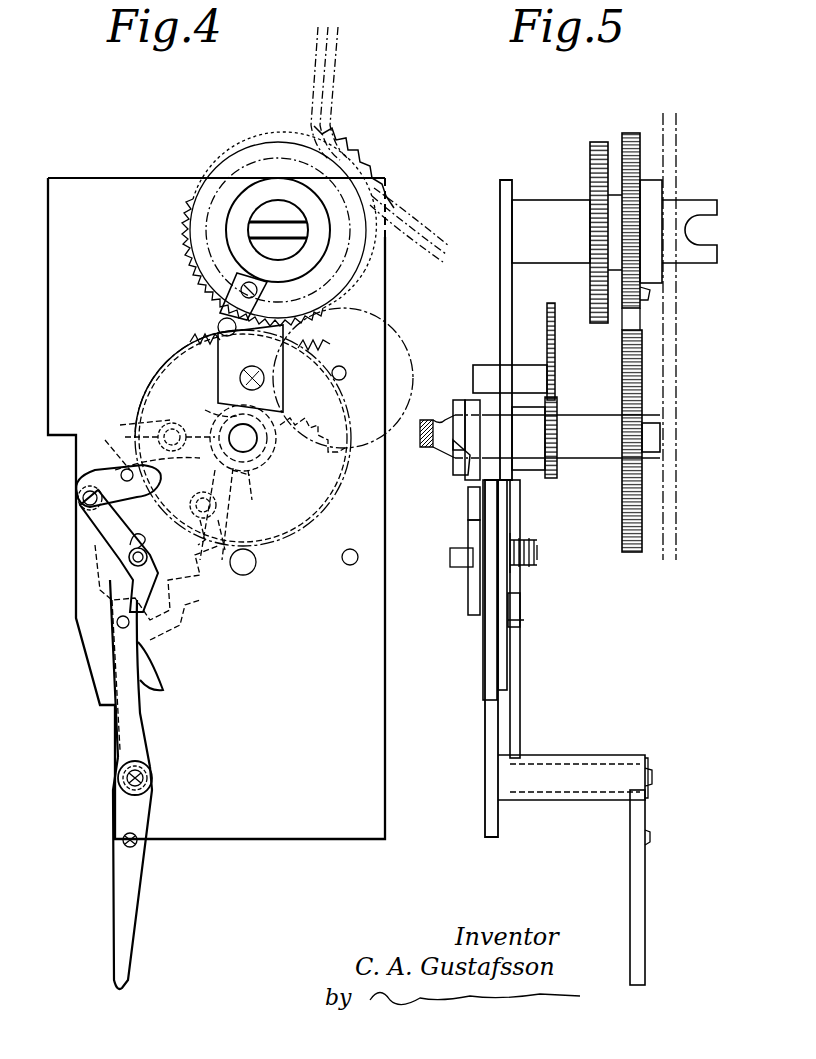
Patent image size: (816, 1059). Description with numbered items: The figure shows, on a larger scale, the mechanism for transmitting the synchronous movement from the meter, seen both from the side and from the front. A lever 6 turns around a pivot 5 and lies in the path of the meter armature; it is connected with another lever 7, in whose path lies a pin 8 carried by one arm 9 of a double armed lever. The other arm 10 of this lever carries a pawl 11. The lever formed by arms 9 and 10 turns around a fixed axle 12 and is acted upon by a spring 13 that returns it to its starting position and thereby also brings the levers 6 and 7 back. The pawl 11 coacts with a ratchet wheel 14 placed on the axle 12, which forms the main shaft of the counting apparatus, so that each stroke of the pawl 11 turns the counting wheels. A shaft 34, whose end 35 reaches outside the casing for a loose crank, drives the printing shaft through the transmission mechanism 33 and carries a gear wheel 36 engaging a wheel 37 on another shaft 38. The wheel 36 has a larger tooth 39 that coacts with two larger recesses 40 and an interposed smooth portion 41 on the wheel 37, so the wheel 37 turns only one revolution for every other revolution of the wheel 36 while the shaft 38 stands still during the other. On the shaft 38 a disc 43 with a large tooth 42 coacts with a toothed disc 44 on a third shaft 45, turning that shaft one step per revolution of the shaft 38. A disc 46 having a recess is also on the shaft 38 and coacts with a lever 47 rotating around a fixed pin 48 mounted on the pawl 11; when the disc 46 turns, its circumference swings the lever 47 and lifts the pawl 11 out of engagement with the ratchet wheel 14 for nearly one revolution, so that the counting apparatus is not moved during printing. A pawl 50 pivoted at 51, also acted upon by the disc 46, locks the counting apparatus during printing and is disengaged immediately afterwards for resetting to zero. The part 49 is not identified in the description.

In FIG. 4, the pivot 5 is at (148, 776).
In FIG. 5, the pivot 5 is at (585, 765).
In FIG. 4, the lever 6 is at (130, 900).
In FIG. 5, the lever 6 is at (646, 877).
In FIG. 4, the lever 7 is at (132, 705).
In FIG. 5, the lever 7 is at (520, 688).
In FIG. 4, the pin 8 is at (115, 618).
In FIG. 5, the pin 8 is at (533, 610).
In FIG. 4, the arm of double armed lever 9 is at (150, 655).
In FIG. 5, the arm of double armed lever 9 is at (497, 652).
In FIG. 4, the arm of double armed lever 10 is at (112, 540).
In FIG. 5, the arm of double armed lever 10 is at (507, 512).
In FIG. 4, the pawl 11 is at (98, 473).
In FIG. 5, the pawl 11 is at (468, 517).
In FIG. 4, the fixed axle 12 is at (185, 575).
In FIG. 5, the fixed axle 12 is at (540, 555).
In FIG. 4, the spring 13 is at (125, 560).
In FIG. 5, the spring 13 is at (516, 545).
In FIG. 4, the ratchet wheel 14 is at (190, 612).
In FIG. 5, the ratchet wheel 14 is at (468, 598).
In FIG. 4, the transmission mechanism 33 is at (320, 127).
In FIG. 5, the transmission mechanism 33 is at (596, 140).
In FIG. 5, the shaft 34 is at (545, 208).
In FIG. 4, the end of shaft 35 is at (273, 217).
In FIG. 5, the end of shaft 35 is at (693, 200).
In FIG. 4, the gear wheel 36 is at (190, 212).
In FIG. 5, the gear wheel 36 is at (641, 150).
In FIG. 4, the wheel 37 is at (172, 352).
In FIG. 5, the wheel 37 is at (645, 497).
In FIG. 4, the shaft 38 is at (252, 446).
In FIG. 5, the shaft 38 is at (592, 416).
In FIG. 4, the larger tooth 39 is at (225, 322).
In FIG. 5, the larger tooth 39 is at (645, 318).
In FIG. 4, the larger recesses 40 is at (222, 343).
In FIG. 4, the smooth portion 41 is at (262, 333).
In FIG. 4, the large tooth 42 is at (157, 468).
In FIG. 4, the disc 43 is at (252, 480).
In FIG. 5, the disc 43 is at (472, 396).
In FIG. 4, the toothed disc 44 is at (300, 428).
In FIG. 5, the toothed disc 44 is at (557, 350).
In FIG. 4, the third shaft 45 is at (341, 368).
In FIG. 5, the third shaft 45 is at (490, 366).
In FIG. 4, the disc having a recess 46 is at (210, 420).
In FIG. 5, the disc having a recess 46 is at (453, 405).
In FIG. 4, the lever 47 is at (128, 432).
In FIG. 5, the lever 47 is at (470, 478).
In FIG. 4, the fixed pin 48 is at (170, 425).
In FIG. 4, the bracket 49 is at (120, 458).
In FIG. 5, the bracket 49 is at (458, 498).
In FIG. 4, the pawl 50 is at (214, 546).
In FIG. 4, the pivot 51 is at (215, 510).